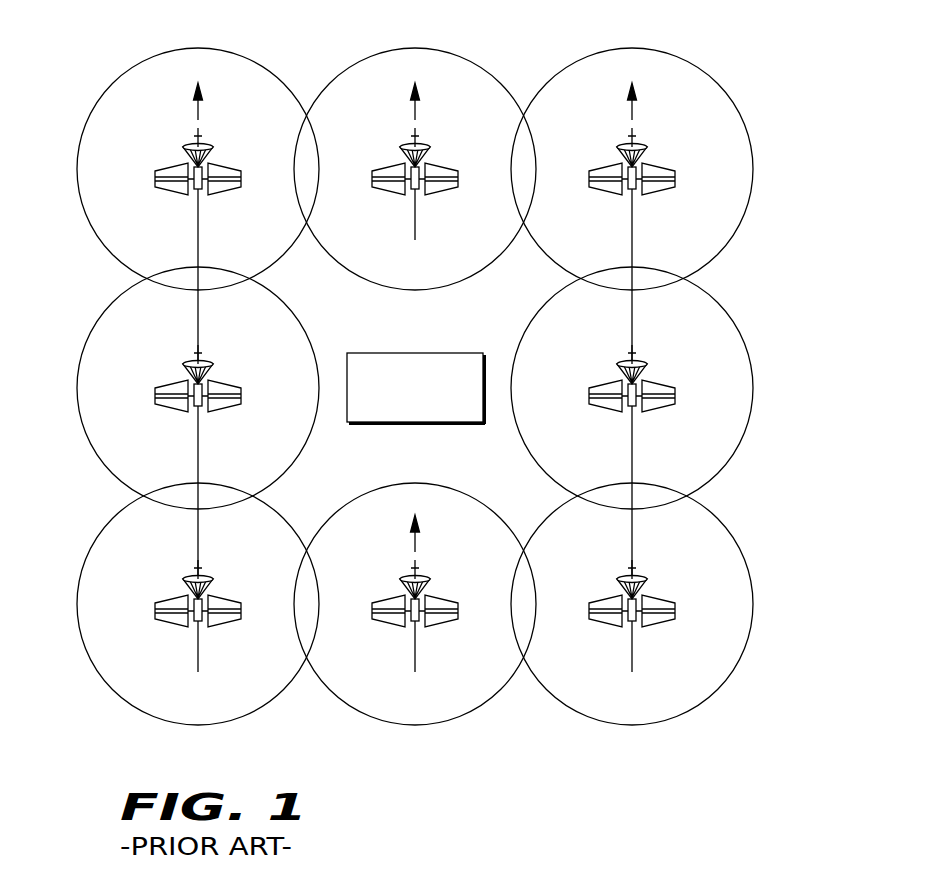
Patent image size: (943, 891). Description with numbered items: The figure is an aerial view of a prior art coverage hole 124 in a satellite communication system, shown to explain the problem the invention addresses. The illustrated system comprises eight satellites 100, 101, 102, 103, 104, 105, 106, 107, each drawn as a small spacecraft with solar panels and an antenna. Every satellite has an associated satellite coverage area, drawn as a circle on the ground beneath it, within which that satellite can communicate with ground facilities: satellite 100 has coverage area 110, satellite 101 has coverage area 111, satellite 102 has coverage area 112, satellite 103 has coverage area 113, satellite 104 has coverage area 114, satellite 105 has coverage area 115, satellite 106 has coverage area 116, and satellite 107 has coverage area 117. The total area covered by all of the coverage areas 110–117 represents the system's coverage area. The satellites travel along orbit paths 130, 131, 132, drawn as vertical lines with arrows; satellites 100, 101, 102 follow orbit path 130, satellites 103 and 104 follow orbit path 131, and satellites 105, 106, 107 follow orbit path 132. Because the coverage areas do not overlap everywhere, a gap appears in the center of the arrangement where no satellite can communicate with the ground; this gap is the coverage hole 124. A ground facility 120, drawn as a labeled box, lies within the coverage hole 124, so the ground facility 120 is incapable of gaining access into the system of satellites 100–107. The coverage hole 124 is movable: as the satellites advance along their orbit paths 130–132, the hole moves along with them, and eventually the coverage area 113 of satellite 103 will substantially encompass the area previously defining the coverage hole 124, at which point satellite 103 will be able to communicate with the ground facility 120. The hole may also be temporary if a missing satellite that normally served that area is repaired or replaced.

The satellite 100 is at (216, 631).
The satellite 101 is at (216, 416).
The satellite 102 is at (216, 199).
The satellite 103 is at (433, 631).
The satellite 104 is at (433, 199).
The satellite 105 is at (650, 631).
The satellite 106 is at (650, 416).
The satellite 107 is at (650, 199).
The satellite coverage area 110 is at (76, 600).
The satellite coverage area 111 is at (76, 383).
The satellite coverage area 112 is at (76, 165).
The satellite coverage area 113 is at (412, 725).
The satellite coverage area 114 is at (415, 48).
The satellite coverage area 115 is at (757, 603).
The satellite coverage area 116 is at (757, 385).
The satellite coverage area 117 is at (757, 170).
The ground facility 120 is at (440, 423).
The coverage hole 124 is at (380, 334).
The orbit path 130 is at (197, 531).
The orbit path 131 is at (413, 105).
The orbit path 132 is at (631, 531).